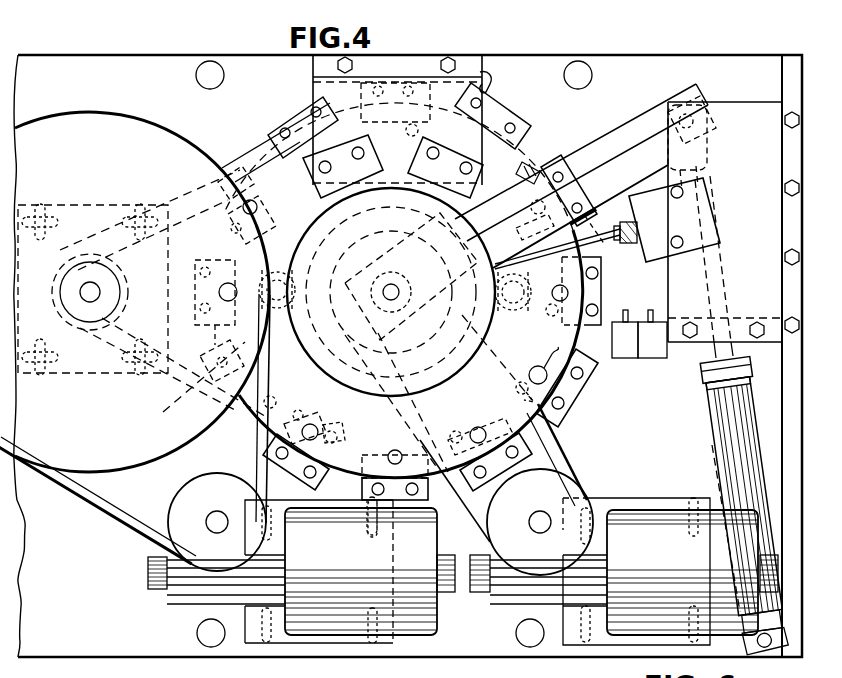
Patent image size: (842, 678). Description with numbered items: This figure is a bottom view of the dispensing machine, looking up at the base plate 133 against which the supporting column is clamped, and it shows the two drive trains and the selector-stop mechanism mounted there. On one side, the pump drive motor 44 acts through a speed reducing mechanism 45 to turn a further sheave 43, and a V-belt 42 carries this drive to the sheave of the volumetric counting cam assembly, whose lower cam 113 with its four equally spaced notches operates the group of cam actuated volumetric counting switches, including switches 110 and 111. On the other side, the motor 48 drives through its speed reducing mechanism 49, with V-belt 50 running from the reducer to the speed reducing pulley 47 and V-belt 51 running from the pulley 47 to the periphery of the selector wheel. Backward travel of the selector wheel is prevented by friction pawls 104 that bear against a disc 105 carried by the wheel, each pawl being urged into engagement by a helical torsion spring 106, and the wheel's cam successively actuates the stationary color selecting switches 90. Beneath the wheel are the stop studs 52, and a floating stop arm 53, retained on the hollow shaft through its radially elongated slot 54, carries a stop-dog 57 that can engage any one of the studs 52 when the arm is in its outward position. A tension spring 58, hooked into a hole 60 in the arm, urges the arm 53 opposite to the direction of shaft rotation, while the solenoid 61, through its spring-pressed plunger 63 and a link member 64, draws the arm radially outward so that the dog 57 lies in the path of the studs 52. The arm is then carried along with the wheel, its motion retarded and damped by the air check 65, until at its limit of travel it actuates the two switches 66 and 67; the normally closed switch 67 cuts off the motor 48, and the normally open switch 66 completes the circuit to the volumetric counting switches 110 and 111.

The V-belt 42 is at (562, 441).
The further sheave 43 is at (568, 494).
The pump drive motor 44 is at (750, 546).
The speed reducing mechanism 45 is at (520, 602).
The speed reducing pulley 47 is at (88, 262).
The motor 48 is at (437, 603).
The speed reducing mechanism 49 is at (174, 604).
The V-belt 50 is at (128, 518).
The V-belt 51 is at (176, 402).
The stop studs 52 is at (272, 226).
The floating stop arm 53 is at (620, 125).
The radially elongated slot 54 is at (437, 277).
The stop-dog 57 is at (507, 240).
The tension spring 58 is at (493, 88).
The hole 60 is at (548, 176).
The solenoid 61 is at (712, 205).
The spring-pressed plunger 63 is at (632, 260).
The link member 64 is at (606, 248).
The air check 65 is at (712, 441).
The switch 66 is at (622, 362).
The switch 67 is at (652, 362).
The stationary color selecting switches 90 is at (266, 400).
The friction pawls 104 is at (286, 336).
The disc 105 is at (360, 291).
The helical torsion springs 106 is at (325, 256).
The cam actuated volumetric counting switch 110 is at (370, 157).
The cam actuated volumetric counting switch 111 is at (476, 176).
The lower cam 113 is at (579, 398).
The base plate 133 is at (478, 652).